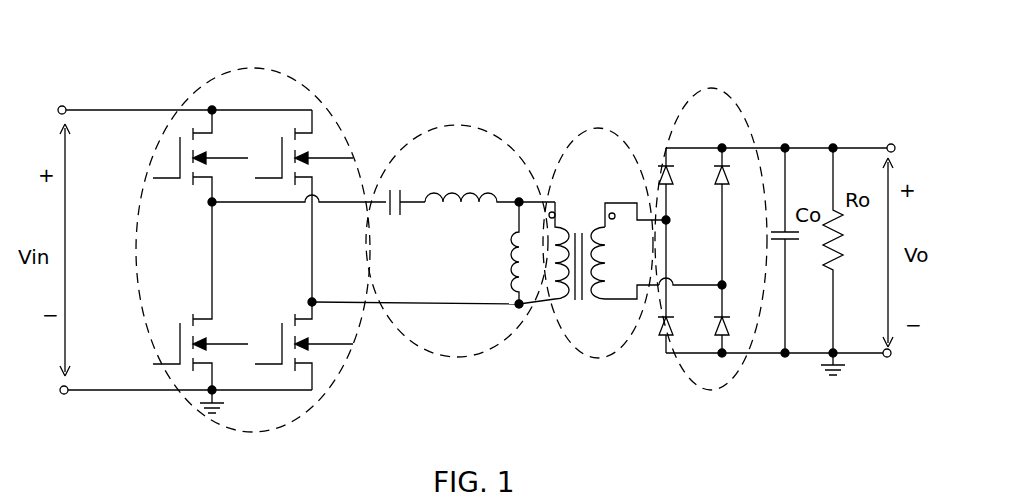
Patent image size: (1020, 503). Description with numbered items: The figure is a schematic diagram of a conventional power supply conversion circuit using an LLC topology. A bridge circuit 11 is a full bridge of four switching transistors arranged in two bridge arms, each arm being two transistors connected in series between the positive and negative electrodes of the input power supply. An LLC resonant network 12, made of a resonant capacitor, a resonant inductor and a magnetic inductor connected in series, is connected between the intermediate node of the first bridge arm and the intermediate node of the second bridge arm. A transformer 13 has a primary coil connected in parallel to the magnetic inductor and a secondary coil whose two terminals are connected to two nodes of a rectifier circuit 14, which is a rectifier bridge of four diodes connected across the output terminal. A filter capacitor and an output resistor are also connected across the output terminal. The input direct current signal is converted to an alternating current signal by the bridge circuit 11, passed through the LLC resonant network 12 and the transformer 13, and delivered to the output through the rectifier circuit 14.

The bridge circuit 11 is at (254, 67).
The LLC resonant network 12 is at (460, 126).
The transformer 13 is at (596, 129).
The rectifier circuit 14 is at (709, 88).